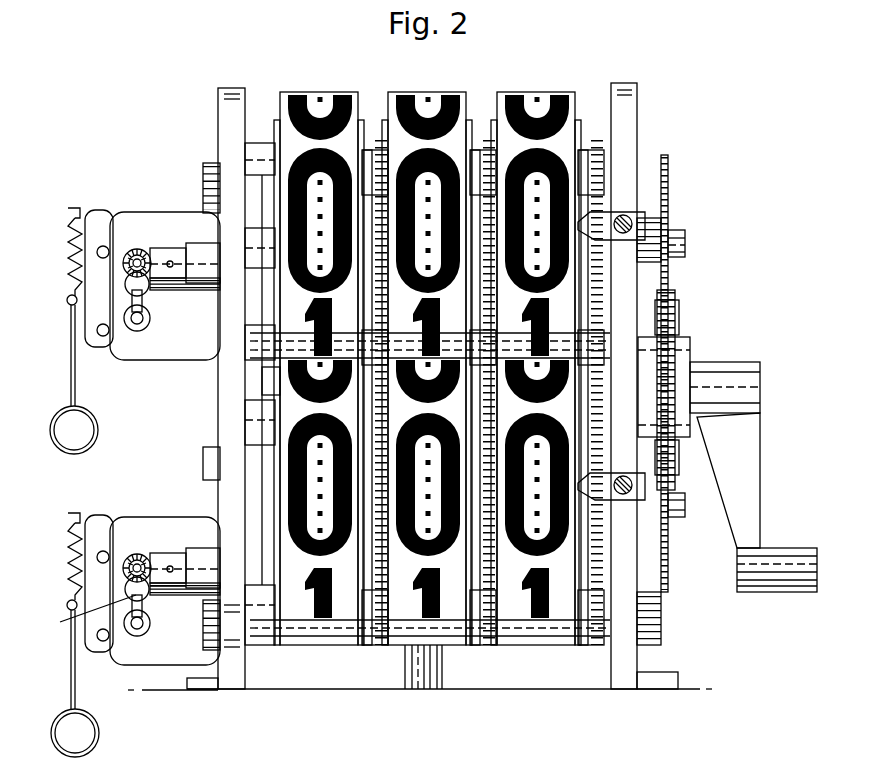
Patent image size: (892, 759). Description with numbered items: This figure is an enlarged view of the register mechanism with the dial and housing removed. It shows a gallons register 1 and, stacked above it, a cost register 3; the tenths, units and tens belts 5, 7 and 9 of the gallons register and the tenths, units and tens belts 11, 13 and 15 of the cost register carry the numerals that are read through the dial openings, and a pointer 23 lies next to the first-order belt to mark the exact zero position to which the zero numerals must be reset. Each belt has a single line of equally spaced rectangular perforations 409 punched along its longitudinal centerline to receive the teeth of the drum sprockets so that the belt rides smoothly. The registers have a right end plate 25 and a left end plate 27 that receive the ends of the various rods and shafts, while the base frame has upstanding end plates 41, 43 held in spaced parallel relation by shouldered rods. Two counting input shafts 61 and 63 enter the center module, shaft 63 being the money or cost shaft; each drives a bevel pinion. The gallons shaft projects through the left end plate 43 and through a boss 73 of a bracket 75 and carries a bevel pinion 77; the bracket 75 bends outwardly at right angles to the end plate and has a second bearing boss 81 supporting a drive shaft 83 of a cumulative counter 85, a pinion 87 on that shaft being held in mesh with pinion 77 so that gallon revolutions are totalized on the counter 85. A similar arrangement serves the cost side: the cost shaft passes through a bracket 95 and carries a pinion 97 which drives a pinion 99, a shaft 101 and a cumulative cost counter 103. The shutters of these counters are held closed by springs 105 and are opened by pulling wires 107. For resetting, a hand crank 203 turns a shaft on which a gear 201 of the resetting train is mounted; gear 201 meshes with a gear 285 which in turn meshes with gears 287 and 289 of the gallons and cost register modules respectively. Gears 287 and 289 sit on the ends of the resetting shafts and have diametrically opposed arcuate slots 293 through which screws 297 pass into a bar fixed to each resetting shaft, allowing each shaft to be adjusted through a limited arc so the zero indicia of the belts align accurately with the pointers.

The gallons register 1 is at (298, 665).
The cost register 3 is at (567, 88).
The tenths belt 5 is at (562, 590).
The units belt 7 is at (450, 590).
The tens belt 9 is at (344, 592).
The tenths belt 11 is at (517, 100).
The units belt 13 is at (461, 112).
The tens belt 15 is at (289, 100).
The pointer 23 is at (608, 220).
The right end plate 25 is at (625, 128).
The left end plate 27 is at (230, 133).
The end plate 41 is at (625, 675).
The left end plate 43 is at (238, 678).
The counting input shaft 61 is at (432, 665).
The input shaft 63 is at (410, 665).
The boss 73 is at (203, 560).
The bracket 75 is at (156, 592).
The bevel pinion 77 is at (168, 556).
The second bearing boss 81 is at (88, 619).
The drive shaft 83 is at (137, 628).
The cumulative counter 85 is at (137, 655).
The pinion 87 is at (135, 556).
The bracket 95 is at (199, 238).
The pinion 97 is at (168, 250).
The pinion 99 is at (135, 248).
The shaft 101 is at (148, 306).
The cumulative cost counter 103 is at (134, 348).
The spring 105 is at (57, 394).
The wire 107 is at (77, 394).
The gear 201 is at (669, 356).
The hand crank 203 is at (740, 512).
The gear 285 is at (678, 306).
The gear 287 is at (669, 578).
The gear 289 is at (668, 173).
The arcuate slot 293 is at (656, 228).
The screw 297 is at (672, 244).
The rectangular perforation 409 is at (420, 187).